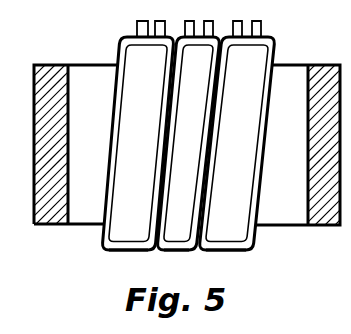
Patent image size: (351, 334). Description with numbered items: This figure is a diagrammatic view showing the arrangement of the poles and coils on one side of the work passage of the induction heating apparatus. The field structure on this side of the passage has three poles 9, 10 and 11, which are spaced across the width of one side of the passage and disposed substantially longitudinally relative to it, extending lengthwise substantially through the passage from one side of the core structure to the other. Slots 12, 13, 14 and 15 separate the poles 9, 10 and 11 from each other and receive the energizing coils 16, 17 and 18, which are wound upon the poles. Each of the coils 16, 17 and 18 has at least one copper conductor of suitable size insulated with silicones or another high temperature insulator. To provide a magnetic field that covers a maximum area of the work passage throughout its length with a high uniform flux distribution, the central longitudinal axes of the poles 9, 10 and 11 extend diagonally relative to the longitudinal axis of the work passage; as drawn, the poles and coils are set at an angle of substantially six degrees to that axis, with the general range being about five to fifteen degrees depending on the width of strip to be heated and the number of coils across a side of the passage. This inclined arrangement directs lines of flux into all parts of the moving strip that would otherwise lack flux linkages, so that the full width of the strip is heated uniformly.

The pole 9 is at (130, 149).
The pole 10 is at (189, 138).
The pole 11 is at (250, 149).
The slot 12 is at (117, 105).
The slot 13 is at (164, 104).
The slot 14 is at (215, 103).
The slot 15 is at (261, 103).
The energizing coil 16 is at (249, 253).
The energizing coil 17 is at (194, 251).
The energizing coil 18 is at (121, 248).